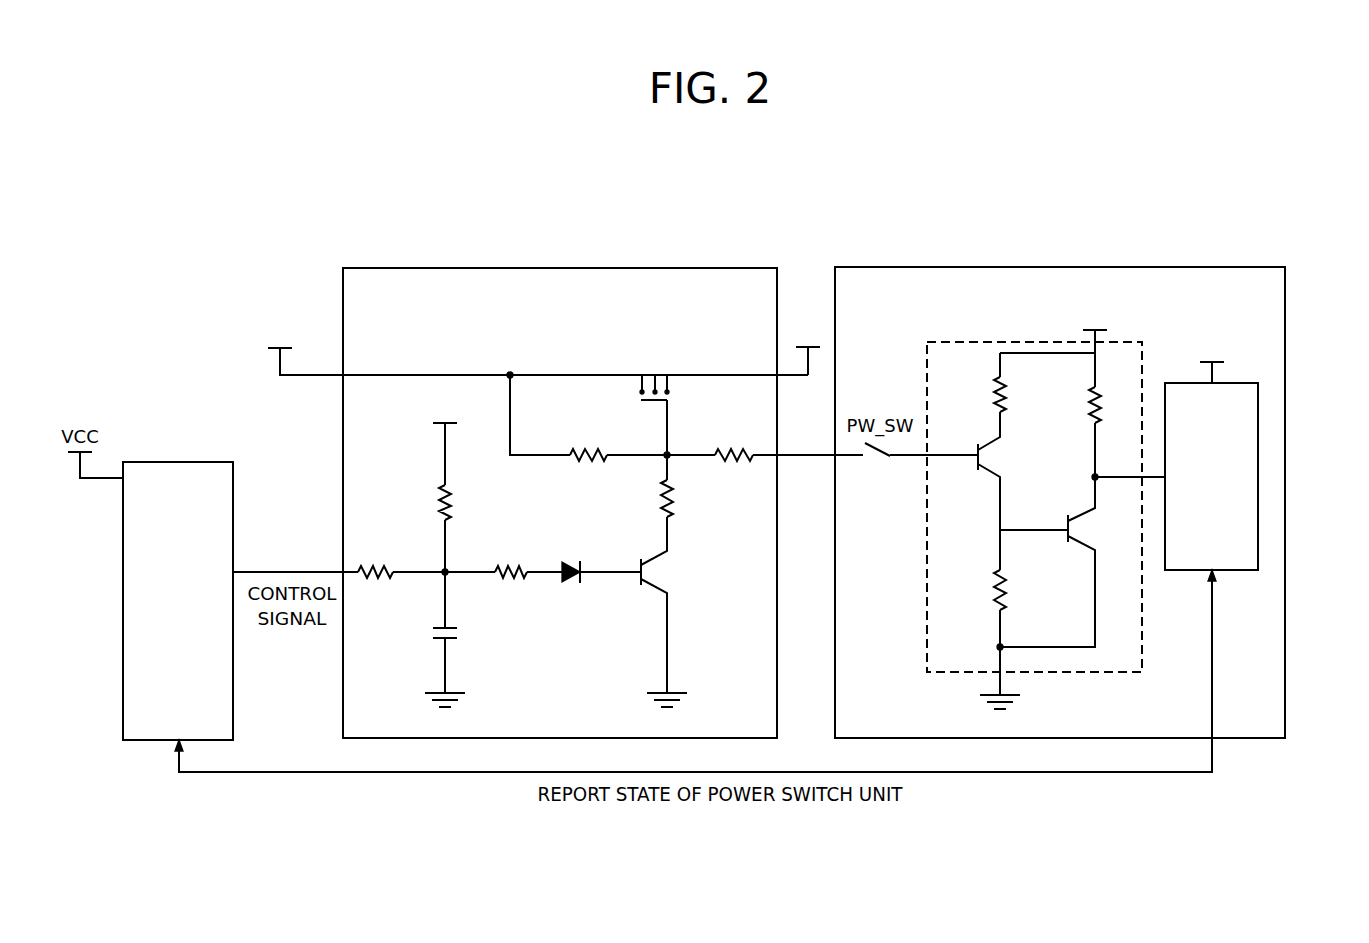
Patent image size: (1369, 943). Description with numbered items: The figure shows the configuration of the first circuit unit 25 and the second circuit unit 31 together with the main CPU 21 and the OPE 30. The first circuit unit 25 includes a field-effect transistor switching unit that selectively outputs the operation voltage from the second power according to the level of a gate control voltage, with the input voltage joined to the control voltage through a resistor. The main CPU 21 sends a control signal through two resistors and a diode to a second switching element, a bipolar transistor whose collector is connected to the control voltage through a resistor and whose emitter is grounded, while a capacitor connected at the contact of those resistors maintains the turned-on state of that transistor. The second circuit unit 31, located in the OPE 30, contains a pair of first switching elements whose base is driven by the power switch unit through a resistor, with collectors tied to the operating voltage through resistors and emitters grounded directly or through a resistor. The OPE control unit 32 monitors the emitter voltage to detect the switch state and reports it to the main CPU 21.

The main CPU 21 is at (178, 462).
The first circuit unit 25 is at (558, 268).
The OPE 30 is at (1058, 267).
The second circuit unit 31 is at (957, 342).
The OPE control unit 32 is at (1258, 472).